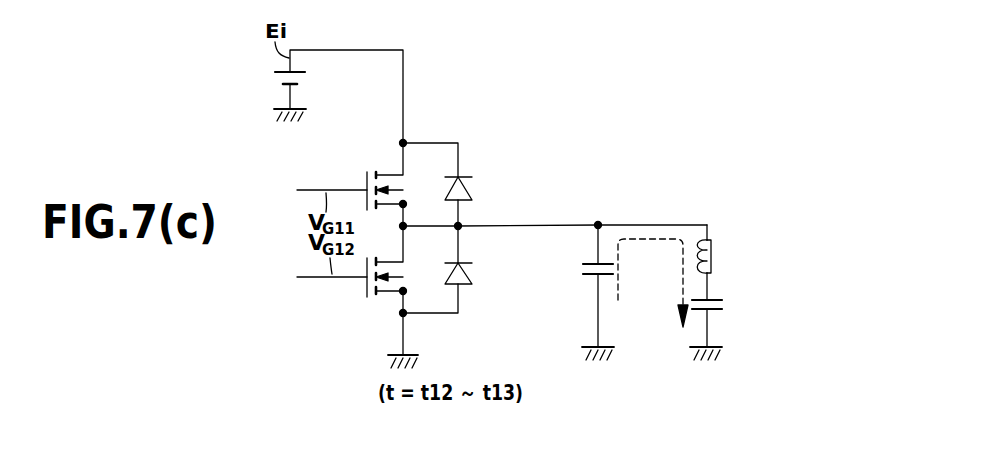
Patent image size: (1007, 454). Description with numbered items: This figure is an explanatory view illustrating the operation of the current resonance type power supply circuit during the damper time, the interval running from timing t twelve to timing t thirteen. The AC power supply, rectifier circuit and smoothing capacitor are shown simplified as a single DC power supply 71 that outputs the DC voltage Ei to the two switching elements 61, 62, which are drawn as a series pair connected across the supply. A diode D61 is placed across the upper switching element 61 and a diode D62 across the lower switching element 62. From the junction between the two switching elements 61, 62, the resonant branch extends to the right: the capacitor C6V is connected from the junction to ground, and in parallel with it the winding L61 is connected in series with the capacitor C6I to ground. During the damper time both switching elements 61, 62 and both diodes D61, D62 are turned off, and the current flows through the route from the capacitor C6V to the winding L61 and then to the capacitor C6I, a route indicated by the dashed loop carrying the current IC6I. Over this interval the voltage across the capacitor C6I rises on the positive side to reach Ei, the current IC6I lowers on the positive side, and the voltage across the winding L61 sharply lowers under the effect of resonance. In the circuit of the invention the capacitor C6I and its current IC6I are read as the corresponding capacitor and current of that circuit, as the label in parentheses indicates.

The DC power supply 71 is at (273, 84).
The switching element 61 is at (366, 177).
The switching element 62 is at (366, 290).
The diode D61 is at (460, 184).
The diode D62 is at (460, 269).
The capacitor C6V is at (588, 278).
The winding L61 is at (728, 249).
The capacitor C6I is at (776, 316).
The current of the capacitor C6I IC6I is at (618, 300).